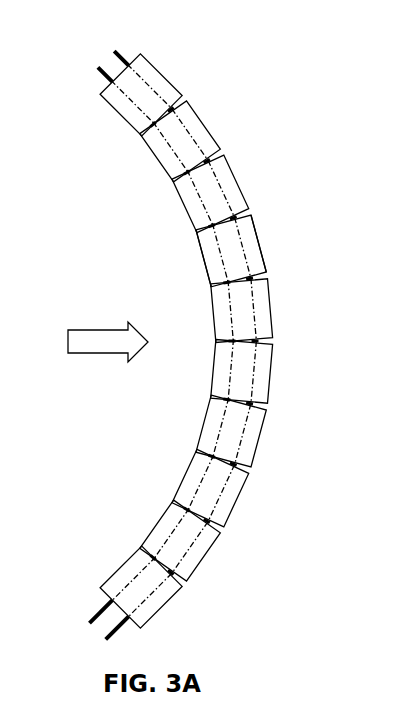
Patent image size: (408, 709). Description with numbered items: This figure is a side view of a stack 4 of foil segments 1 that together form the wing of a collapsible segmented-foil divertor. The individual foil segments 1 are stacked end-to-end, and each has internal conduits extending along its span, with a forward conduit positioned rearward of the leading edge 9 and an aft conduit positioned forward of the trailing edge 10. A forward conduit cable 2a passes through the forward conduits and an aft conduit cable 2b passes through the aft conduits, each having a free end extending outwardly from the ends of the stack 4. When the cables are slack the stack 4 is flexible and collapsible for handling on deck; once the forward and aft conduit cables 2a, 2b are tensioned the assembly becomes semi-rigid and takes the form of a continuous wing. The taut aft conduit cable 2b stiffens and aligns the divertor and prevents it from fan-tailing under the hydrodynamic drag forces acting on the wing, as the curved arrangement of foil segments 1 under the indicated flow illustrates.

The foil segment 1 is at (190, 567).
The forward conduit cable 2a is at (98, 68).
The aft conduit cable 2b is at (122, 58).
The stack 4 is at (137, 412).
The leading edge 9 is at (190, 253).
The trailing edge 10 is at (268, 234).